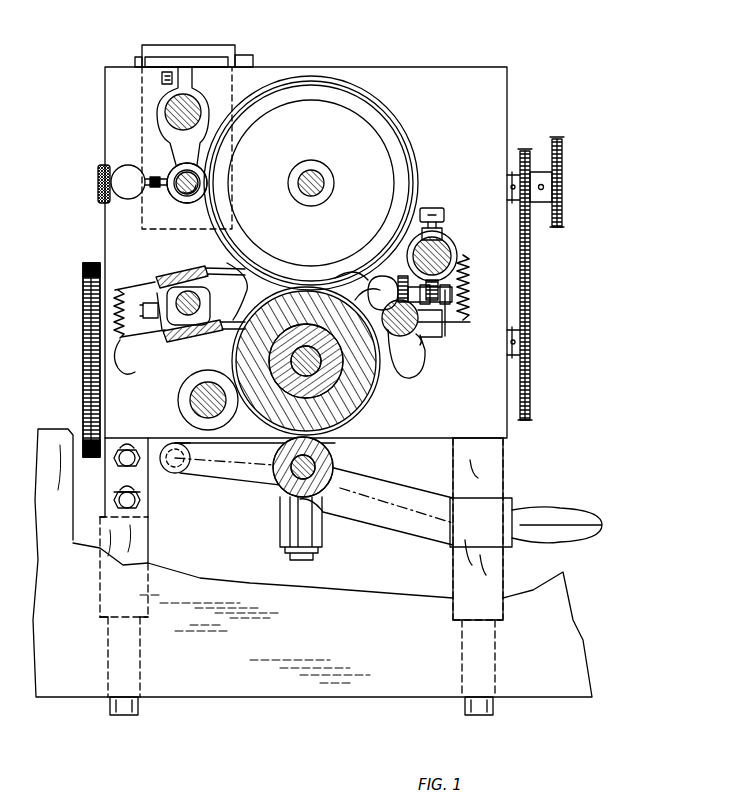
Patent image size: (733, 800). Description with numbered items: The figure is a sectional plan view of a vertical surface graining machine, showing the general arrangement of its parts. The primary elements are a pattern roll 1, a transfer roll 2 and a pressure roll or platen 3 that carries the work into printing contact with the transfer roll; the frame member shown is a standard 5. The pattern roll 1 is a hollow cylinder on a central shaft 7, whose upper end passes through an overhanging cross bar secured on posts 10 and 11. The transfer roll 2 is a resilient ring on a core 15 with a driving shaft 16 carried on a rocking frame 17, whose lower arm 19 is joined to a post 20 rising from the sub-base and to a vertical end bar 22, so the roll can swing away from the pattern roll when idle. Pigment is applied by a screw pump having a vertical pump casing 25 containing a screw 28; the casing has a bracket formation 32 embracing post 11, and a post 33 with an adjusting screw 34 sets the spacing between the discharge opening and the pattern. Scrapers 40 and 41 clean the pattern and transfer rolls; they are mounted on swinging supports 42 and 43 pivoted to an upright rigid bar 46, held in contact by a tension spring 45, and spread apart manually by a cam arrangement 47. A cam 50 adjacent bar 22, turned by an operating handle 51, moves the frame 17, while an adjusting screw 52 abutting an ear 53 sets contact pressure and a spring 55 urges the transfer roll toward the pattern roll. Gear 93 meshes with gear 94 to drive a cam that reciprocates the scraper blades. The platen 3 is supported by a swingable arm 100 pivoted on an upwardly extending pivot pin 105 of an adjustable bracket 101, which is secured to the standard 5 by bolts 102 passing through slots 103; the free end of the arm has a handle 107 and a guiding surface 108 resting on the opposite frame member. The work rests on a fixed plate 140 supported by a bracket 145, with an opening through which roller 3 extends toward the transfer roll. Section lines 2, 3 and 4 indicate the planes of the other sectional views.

The pattern roll 1 is at (360, 100).
The central shaft 7 is at (320, 186).
The post 11 is at (172, 107).
The bracket formation 32 is at (168, 145).
The pump casing 25 is at (181, 164).
The screw 28 is at (200, 192).
The post 33 is at (139, 182).
The adjusting screw 34 is at (106, 200).
The adjusting screw 52 is at (430, 210).
The post 10 is at (448, 240).
The spring 55 is at (472, 283).
The operating handle 51 is at (465, 312).
The ear 53 is at (440, 337).
The cam 50 is at (410, 293).
The lower arm portion 19 is at (391, 318).
The rocking support or frame 17 is at (412, 342).
The vertical end bar 22 is at (398, 346).
The core 15 is at (322, 367).
The driving shaft 16 is at (332, 380).
The post 20 is at (200, 400).
The swinging support 42 is at (168, 280).
The scraping device 40 is at (218, 270).
The scraping device 41 is at (233, 318).
The upright rigid bar 46 is at (197, 333).
The swinging support 43 is at (170, 340).
The cam arrangement 47 is at (145, 335).
The tension spring 45 is at (139, 334).
The gear 94 is at (83, 297).
The gear 93 is at (83, 390).
The bolts 102 is at (142, 508).
The pivot pin 105 is at (190, 455).
The adjustable bracket 101 is at (180, 482).
The slots 103 is at (142, 497).
The guiding surface 108 is at (492, 484).
The handle 107 is at (570, 535).
The swingable arm 100 is at (385, 528).
The standard 5 is at (455, 572).
The fixed plate 140 is at (329, 629).
The bracket 145 is at (493, 706).
The transfer roll 2 is at (282, 754).
The pressure roll or platen 3 is at (594, 201).
The section line 4 is at (624, 514).